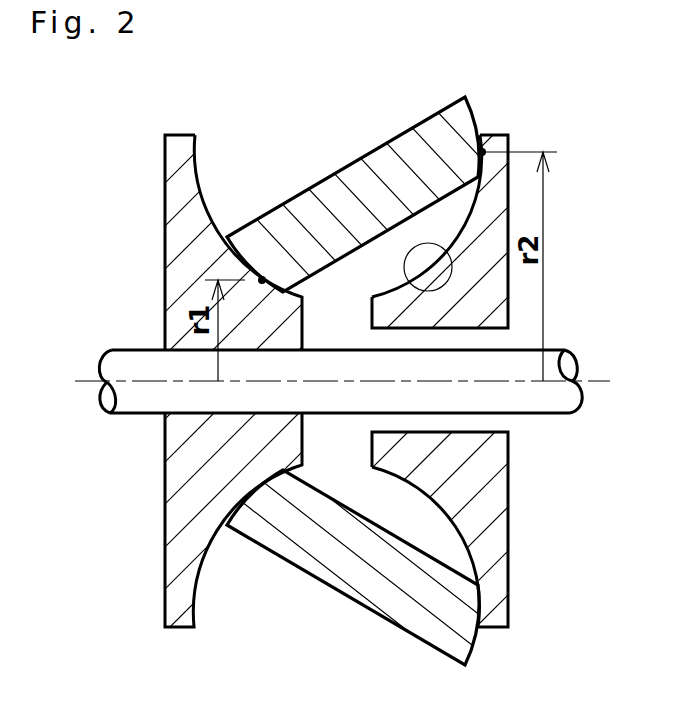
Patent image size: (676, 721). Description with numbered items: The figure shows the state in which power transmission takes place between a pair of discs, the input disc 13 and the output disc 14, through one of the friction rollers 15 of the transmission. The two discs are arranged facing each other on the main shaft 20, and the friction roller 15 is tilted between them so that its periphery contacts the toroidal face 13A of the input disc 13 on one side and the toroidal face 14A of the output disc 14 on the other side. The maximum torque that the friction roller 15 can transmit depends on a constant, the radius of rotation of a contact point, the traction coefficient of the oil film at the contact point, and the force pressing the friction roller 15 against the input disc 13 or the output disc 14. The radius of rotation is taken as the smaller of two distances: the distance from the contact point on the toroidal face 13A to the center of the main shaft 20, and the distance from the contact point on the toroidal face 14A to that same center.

The input disc 13 is at (178, 135).
The toroidal face 13A is at (200, 184).
The output disc 14 is at (493, 135).
The toroidal face 14A is at (443, 297).
The friction roller 15 is at (401, 134).
The main shaft 20 is at (133, 349).